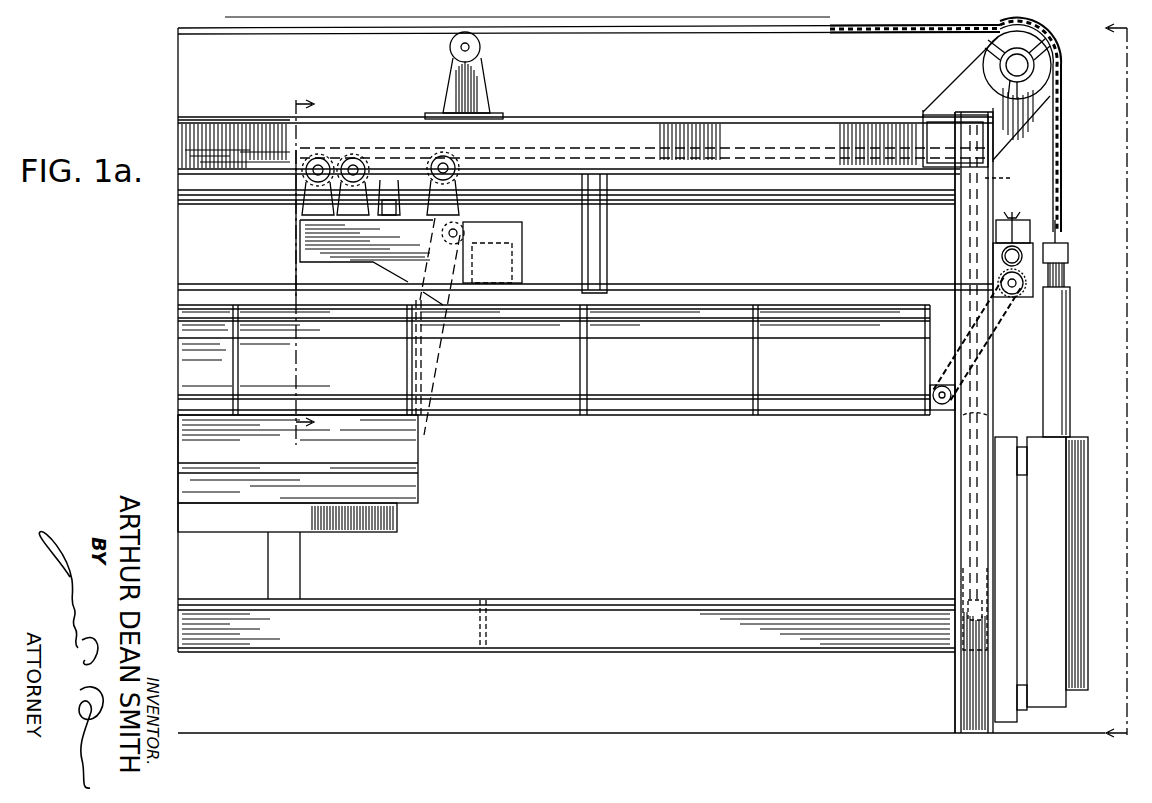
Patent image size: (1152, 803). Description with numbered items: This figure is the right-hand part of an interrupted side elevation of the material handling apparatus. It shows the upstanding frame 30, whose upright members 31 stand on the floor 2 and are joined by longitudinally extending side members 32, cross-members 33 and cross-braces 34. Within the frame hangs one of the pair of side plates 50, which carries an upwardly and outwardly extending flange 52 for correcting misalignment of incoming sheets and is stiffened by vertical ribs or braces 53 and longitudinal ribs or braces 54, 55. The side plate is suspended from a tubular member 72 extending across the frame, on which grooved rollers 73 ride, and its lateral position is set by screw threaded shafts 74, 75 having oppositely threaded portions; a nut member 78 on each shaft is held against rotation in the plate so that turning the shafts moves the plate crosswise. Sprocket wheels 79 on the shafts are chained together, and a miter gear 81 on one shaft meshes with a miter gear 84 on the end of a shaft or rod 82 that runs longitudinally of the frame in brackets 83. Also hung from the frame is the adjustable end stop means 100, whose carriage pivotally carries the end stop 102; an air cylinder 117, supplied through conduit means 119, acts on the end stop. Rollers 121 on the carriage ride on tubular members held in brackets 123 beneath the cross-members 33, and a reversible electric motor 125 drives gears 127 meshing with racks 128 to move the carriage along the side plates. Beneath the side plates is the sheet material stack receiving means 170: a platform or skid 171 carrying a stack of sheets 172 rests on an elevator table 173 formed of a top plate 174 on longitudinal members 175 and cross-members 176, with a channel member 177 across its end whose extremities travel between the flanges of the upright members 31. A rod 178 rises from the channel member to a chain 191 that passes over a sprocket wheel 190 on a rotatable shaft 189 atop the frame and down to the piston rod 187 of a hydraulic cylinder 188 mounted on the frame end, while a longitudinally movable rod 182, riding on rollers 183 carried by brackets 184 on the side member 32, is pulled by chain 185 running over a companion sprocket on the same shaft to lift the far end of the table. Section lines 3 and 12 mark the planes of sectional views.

The floor 2 is at (751, 733).
The section line 3- 3 is at (1122, 379).
The section line 12- 12 is at (298, 271).
The upstanding frame 30 is at (948, 516).
The upright members 31 is at (955, 466).
The longitudinally extending side members 32 is at (752, 118).
The cross-members 33 is at (972, 133).
The cross-braces 34 is at (480, 122).
The side plates 50 is at (554, 352).
The flange 52 is at (680, 303).
The vertical ribs or braces 53 is at (240, 376).
The longitudinal ribs or braces 54 is at (828, 322).
The longitudinal ribs or braces 55 is at (760, 416).
The tubular member 72 is at (1028, 248).
The grooved rollers 73 is at (1012, 218).
The screw threaded shaft 74 is at (1024, 276).
The screw threaded shaft 75 is at (932, 392).
The nut member 78 is at (935, 405).
The sprocket wheel 79 is at (940, 404).
The miter gear 81 is at (1020, 290).
The shaft or rod 82 is at (792, 283).
The brackets 83 is at (608, 247).
The miter gear 84 is at (1000, 310).
The adjustable end stop means 100 is at (290, 250).
The end stop 102 is at (444, 382).
The air cylinder 117 is at (505, 248).
The conduit means 119 is at (518, 262).
The rollers 121 is at (306, 183).
The brackets 123 is at (940, 206).
The electric motor 125 is at (371, 262).
The gears 127 is at (355, 155).
The racks 128 is at (395, 160).
The sheet material stack receiving means 170 is at (566, 624).
The platform or skid 171 is at (397, 519).
The stack of sheets 172 is at (418, 480).
The elevator table 173 is at (737, 592).
The top plate 174 is at (845, 599).
The longitudinal members 175 is at (837, 652).
The cross-members 176 is at (486, 630).
The channel member 177 is at (962, 578).
The rod 178 is at (995, 407).
The longitudinally movable rod 182 is at (658, 33).
The rollers 183 is at (480, 48).
The brackets 184 is at (482, 76).
The chain 185 is at (915, 40).
The piston rod 187 is at (1068, 345).
The hydraulic cylinder 188 is at (1078, 520).
The rotatable shaft 189 is at (1030, 60).
The second sprocket wheel 190 is at (1046, 36).
The chain 191 is at (1014, 205).